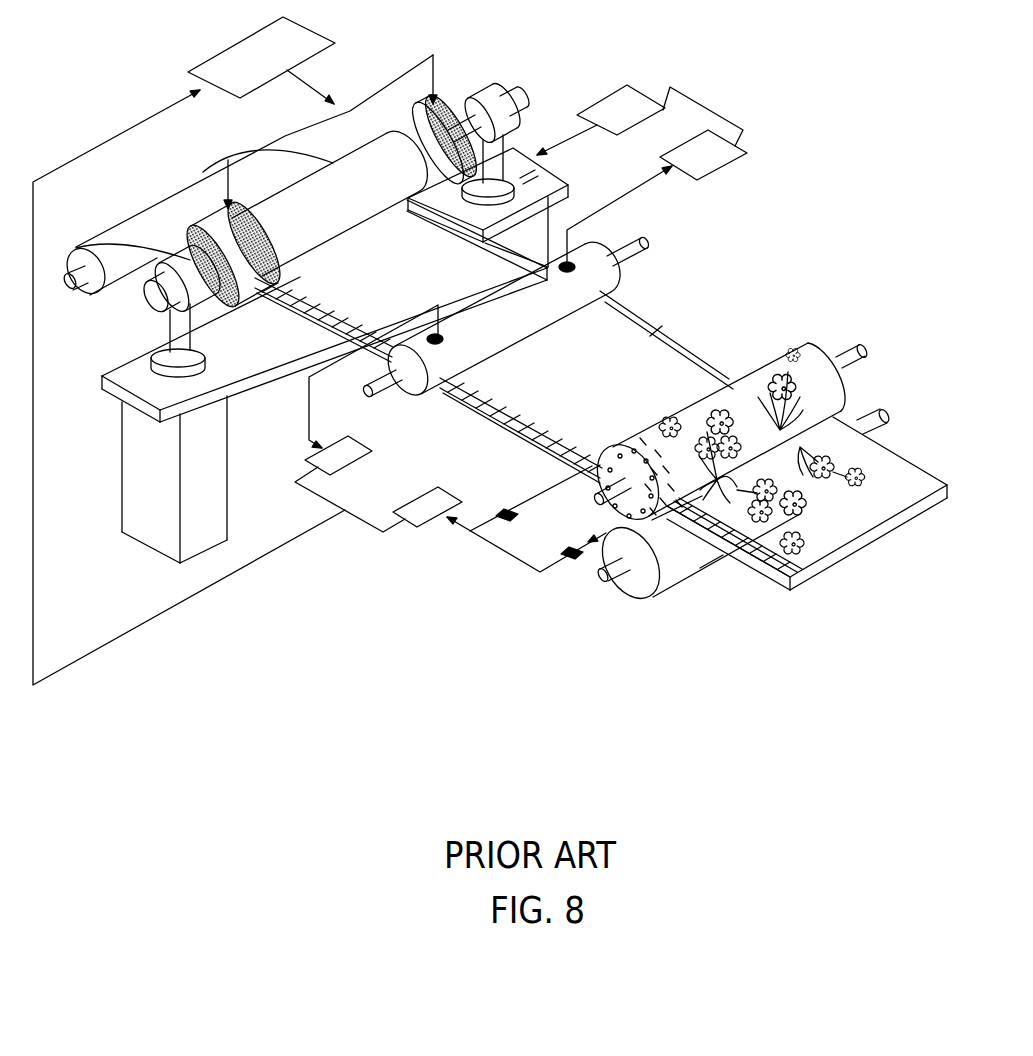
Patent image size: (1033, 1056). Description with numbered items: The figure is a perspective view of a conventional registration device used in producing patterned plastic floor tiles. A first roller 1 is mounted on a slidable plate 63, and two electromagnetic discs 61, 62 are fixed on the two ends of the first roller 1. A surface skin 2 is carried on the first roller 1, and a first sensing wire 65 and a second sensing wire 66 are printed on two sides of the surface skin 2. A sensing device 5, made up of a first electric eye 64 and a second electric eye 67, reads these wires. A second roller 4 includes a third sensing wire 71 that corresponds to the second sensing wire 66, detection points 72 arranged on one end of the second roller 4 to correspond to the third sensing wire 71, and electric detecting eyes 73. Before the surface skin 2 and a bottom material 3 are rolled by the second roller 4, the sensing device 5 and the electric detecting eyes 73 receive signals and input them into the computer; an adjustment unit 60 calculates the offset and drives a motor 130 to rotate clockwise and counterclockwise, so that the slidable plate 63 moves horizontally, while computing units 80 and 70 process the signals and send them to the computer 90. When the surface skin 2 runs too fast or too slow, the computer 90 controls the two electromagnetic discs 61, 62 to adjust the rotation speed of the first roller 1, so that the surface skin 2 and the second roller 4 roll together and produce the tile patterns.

The first roller 1 is at (376, 155).
The surface skin 2 is at (657, 330).
The bottom material 3 is at (142, 212).
The second roller 4 is at (807, 348).
The sensing device 5 is at (597, 243).
The adjustment unit 60 is at (703, 155).
The electromagnetic disc 61 is at (207, 220).
The electromagnetic disc 62 is at (443, 103).
The slidable plate 63 is at (565, 175).
The first electric eye 64 is at (622, 280).
The first sensing wire 65 is at (697, 348).
The second sensing wire 66 is at (518, 428).
The second electric eye 67 is at (436, 348).
The computing unit 70 is at (420, 514).
The third sensing wire 71 is at (698, 537).
The detection points 72 is at (674, 538).
The electric detecting eyes 73 is at (572, 564).
The computing unit 80 is at (320, 460).
The computer 90 is at (261, 60).
The motor 130 is at (612, 101).